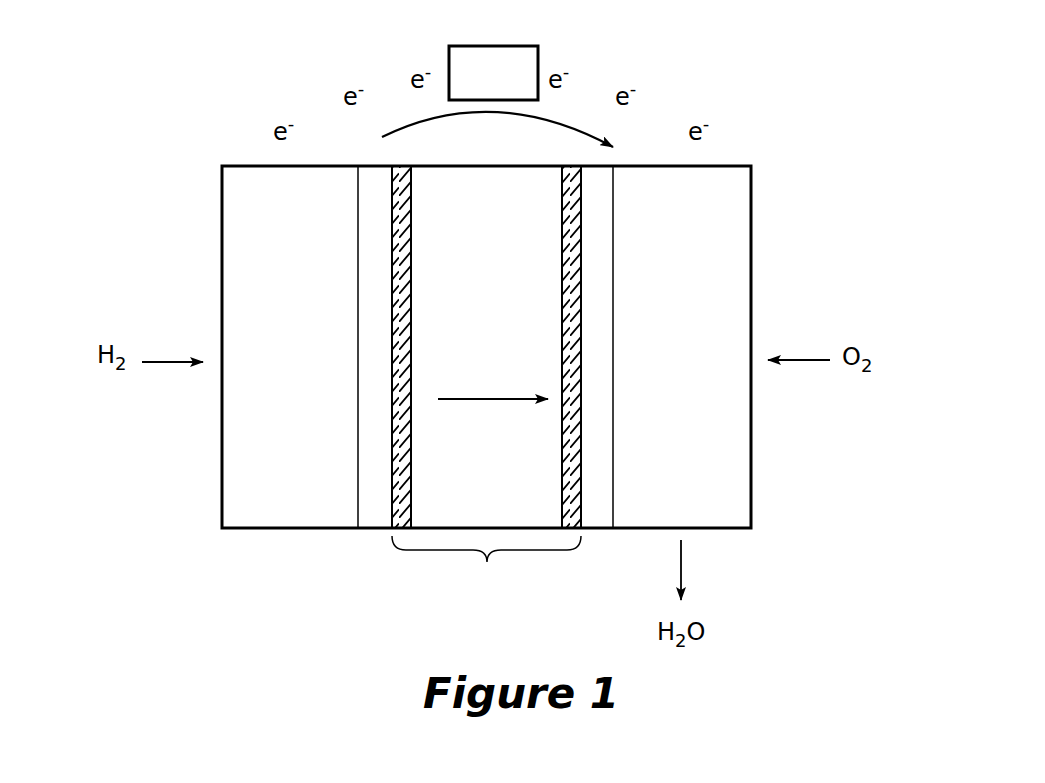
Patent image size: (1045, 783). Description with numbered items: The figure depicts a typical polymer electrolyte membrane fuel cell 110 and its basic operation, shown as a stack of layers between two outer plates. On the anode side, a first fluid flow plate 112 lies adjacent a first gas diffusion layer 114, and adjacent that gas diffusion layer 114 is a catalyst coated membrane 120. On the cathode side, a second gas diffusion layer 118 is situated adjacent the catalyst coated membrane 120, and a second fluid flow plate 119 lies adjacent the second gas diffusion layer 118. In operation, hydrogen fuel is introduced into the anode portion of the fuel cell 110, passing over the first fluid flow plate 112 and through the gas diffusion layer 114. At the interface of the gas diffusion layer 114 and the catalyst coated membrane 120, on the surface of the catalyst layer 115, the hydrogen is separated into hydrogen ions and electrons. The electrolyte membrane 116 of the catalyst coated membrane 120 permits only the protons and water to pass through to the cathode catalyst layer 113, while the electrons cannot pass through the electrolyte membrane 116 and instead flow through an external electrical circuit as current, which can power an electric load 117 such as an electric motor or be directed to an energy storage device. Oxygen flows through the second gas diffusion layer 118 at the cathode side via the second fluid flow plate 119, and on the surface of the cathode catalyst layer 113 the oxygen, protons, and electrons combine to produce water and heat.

The fuel cell 110 is at (780, 76).
The first fluid flow plate 112 is at (305, 512).
The cathode catalyst layer 113 is at (575, 165).
The first gas diffusion layer 114 is at (373, 530).
The catalyst layer 115 is at (400, 165).
The electrolyte membrane 116 is at (507, 512).
The electric load 117 is at (505, 46).
The second gas diffusion layer 118 is at (597, 530).
The second fluid flow plate 119 is at (708, 512).
The catalyst coated membrane 120 is at (486, 567).